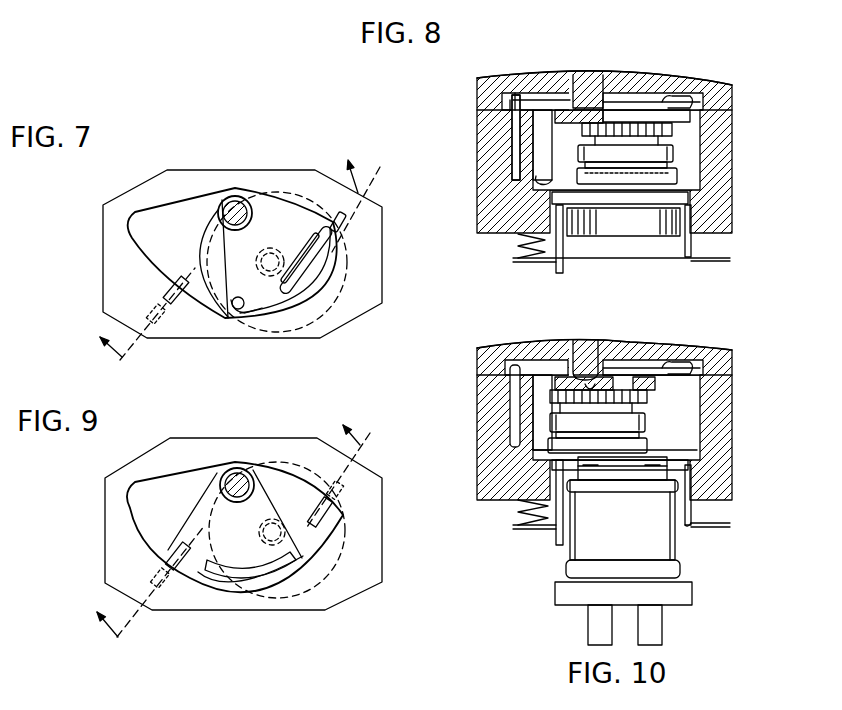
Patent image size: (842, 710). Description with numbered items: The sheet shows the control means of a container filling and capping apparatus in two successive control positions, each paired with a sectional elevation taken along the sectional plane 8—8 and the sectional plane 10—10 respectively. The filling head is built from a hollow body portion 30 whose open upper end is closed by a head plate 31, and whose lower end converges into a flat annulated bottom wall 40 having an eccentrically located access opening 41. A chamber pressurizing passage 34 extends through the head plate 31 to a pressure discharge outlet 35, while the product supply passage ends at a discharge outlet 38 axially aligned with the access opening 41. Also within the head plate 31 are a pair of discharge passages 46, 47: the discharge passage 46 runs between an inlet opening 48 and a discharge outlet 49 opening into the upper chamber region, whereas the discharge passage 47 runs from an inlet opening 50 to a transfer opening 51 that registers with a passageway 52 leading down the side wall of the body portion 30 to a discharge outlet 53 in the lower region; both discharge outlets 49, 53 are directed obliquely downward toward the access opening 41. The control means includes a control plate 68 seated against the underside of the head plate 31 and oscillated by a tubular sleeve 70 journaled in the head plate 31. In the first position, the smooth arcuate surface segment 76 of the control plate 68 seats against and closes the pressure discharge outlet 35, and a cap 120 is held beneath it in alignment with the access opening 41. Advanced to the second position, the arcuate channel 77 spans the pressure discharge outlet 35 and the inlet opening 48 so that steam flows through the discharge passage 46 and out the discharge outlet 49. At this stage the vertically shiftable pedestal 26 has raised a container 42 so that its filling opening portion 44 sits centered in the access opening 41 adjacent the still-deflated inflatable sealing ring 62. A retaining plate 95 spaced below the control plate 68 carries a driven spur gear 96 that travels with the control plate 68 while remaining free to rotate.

In FIG. 7, the sectional plane 8— 8 is at (249, 271).
In FIG. 9, the sectional plane 10— 10 is at (251, 541).
In FIG. 10, the vertically shiftable pedestal 26 is at (635, 606).
In FIG. 7, the hollow body portion 30 is at (103, 258).
In FIG. 9, the hollow body portion 30 is at (105, 533).
In FIG. 8, the hollow body portion 30 is at (493, 160).
In FIG. 10, the hollow body portion 30 is at (497, 395).
In FIG. 8, the head plate 31 is at (497, 86).
In FIG. 10, the head plate 31 is at (500, 352).
In FIG. 8, the chamber pressurizing passage 34 is at (583, 78).
In FIG. 10, the chamber pressurizing passage 34 is at (582, 345).
In FIG. 7, the pressure discharge outlet 35 is at (227, 322).
In FIG. 9, the pressure discharge outlet 35 is at (234, 592).
In FIG. 8, the pressure discharge outlet 35 is at (590, 110).
In FIG. 10, the pressure discharge outlet 35 is at (590, 378).
In FIG. 7, the discharge outlet 38 is at (272, 248).
In FIG. 9, the discharge outlet 38 is at (262, 527).
In FIG. 7, the annulated bottom wall 40 is at (182, 251).
In FIG. 9, the annulated bottom wall 40 is at (173, 519).
In FIG. 8, the access opening 41 is at (693, 205).
In FIG. 10, the access opening 41 is at (693, 490).
In FIG. 10, the container 42 is at (633, 543).
In FIG. 10, the filling opening portion 44 is at (663, 455).
In FIG. 8, the discharge passage 46 is at (658, 96).
In FIG. 10, the discharge passage 46 is at (655, 372).
In FIG. 8, the discharge passage 47 is at (530, 100).
In FIG. 9, the inlet opening 48 is at (307, 582).
In FIG. 8, the inlet opening 48 is at (612, 100).
In FIG. 10, the inlet opening 48 is at (612, 375).
In FIG. 9, the discharge outlet 49 is at (328, 495).
In FIG. 8, the discharge outlet 49 is at (703, 105).
In FIG. 10, the discharge outlet 49 is at (688, 372).
In FIG. 8, the inlet opening 50 is at (566, 120).
In FIG. 8, the transfer opening 51 is at (518, 95).
In FIG. 8, the passageway 52 is at (515, 120).
In FIG. 8, the discharge outlet 53 is at (553, 172).
In FIG. 10, the inflatable annular sealing ring 62 is at (688, 525).
In FIG. 7, the control plate 68 is at (250, 260).
In FIG. 9, the control plate 68 is at (245, 554).
In FIG. 8, the control plate 68 is at (680, 124).
In FIG. 10, the control plate 68 is at (656, 386).
In FIG. 7, the tubular sleeve 70 is at (222, 200).
In FIG. 9, the tubular sleeve 70 is at (233, 462).
In FIG. 7, the smooth arcuate surface segment 76 is at (256, 310).
In FIG. 9, the smooth arcuate surface segment 76 is at (188, 572).
In FIG. 7, the arcuate groove or channel 77 is at (308, 272).
In FIG. 9, the arcuate groove or channel 77 is at (270, 573).
In FIG. 10, the arcuate groove or channel 77 is at (648, 397).
In FIG. 10, the retaining plate 95 is at (550, 408).
In FIG. 10, the driven spur gear 96 is at (550, 398).
In FIG. 8, the closure or cap 120 is at (672, 182).
In FIG. 10, the closure or cap 120 is at (648, 438).